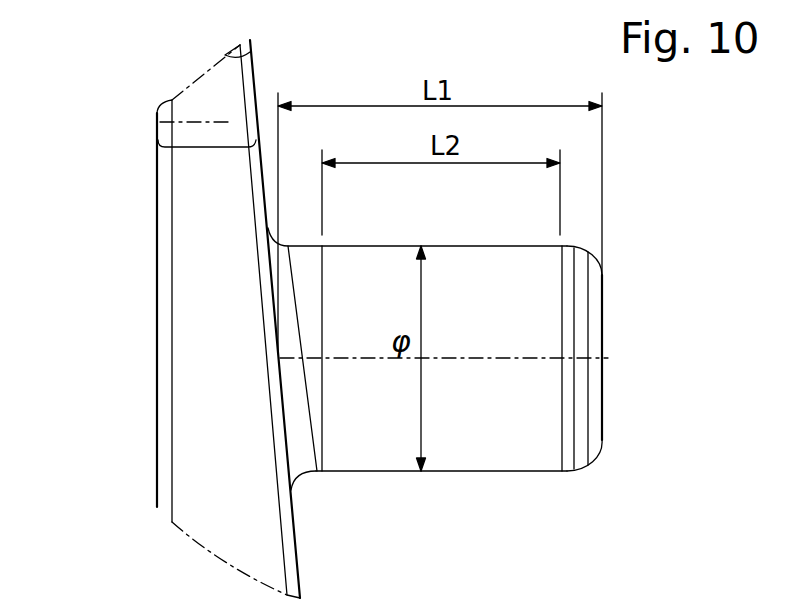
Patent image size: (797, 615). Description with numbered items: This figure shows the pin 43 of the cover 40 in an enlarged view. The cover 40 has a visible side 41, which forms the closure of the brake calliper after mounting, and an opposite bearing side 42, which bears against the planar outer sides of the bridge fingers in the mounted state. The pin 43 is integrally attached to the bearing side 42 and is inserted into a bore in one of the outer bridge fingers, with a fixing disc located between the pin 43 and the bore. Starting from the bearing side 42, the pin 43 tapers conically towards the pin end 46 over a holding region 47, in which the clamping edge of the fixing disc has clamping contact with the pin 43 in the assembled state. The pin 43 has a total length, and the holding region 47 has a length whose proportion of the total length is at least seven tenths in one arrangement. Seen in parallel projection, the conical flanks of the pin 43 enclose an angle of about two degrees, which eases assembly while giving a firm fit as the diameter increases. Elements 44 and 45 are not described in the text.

The cover 40 is at (215, 315).
The visible side 41 is at (215, 315).
The bearing side 42 is at (263, 75).
The pin 43 is at (490, 417).
The shaft cylindrical surface 44 is at (357, 423).
The shaft body 45 is at (490, 417).
The pin end 46 is at (603, 334).
The holding region 47 is at (408, 475).